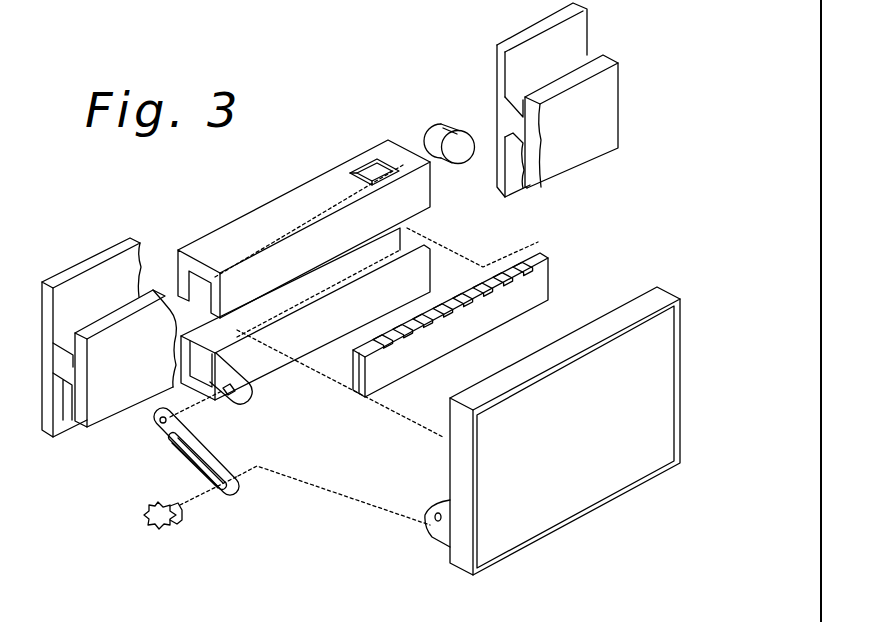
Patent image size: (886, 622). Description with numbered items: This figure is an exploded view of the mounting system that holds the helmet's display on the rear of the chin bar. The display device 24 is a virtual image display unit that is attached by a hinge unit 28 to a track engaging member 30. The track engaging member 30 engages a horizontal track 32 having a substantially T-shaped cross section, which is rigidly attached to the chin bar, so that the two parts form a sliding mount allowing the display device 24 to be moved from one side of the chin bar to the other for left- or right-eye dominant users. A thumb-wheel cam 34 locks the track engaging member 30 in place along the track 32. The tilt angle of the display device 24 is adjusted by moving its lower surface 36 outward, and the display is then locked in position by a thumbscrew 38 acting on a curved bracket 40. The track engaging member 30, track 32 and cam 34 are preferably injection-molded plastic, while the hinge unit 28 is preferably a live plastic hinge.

The display device 24 is at (563, 502).
The hinge unit 28 is at (541, 252).
The track engaging member 30 is at (253, 227).
The track 32 is at (87, 266).
The thumb-wheel cam 34 is at (434, 128).
The lower surface 36 is at (528, 547).
The thumbscrew 38 is at (149, 529).
The curved bracket 40 is at (178, 452).